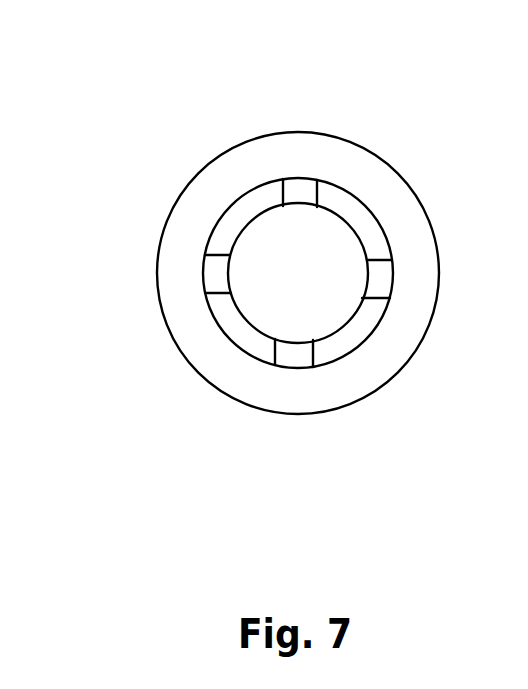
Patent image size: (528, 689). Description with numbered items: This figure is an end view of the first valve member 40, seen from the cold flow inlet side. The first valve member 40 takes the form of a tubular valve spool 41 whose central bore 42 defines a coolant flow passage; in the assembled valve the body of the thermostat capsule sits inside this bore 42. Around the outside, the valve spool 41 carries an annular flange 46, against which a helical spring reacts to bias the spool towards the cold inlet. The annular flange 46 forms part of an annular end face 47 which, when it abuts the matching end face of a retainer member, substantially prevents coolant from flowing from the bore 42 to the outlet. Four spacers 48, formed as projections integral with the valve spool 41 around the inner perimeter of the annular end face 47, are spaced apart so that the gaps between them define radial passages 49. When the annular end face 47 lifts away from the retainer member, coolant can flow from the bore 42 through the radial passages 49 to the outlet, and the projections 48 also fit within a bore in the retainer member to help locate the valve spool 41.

The first valve member 40 is at (150, 284).
The valve spool 41 is at (172, 330).
The bore 42 is at (244, 242).
The annular flange 46 is at (262, 134).
The annular end face 47 is at (220, 178).
The spacers 48 is at (318, 185).
The radial passages 49 is at (266, 180).